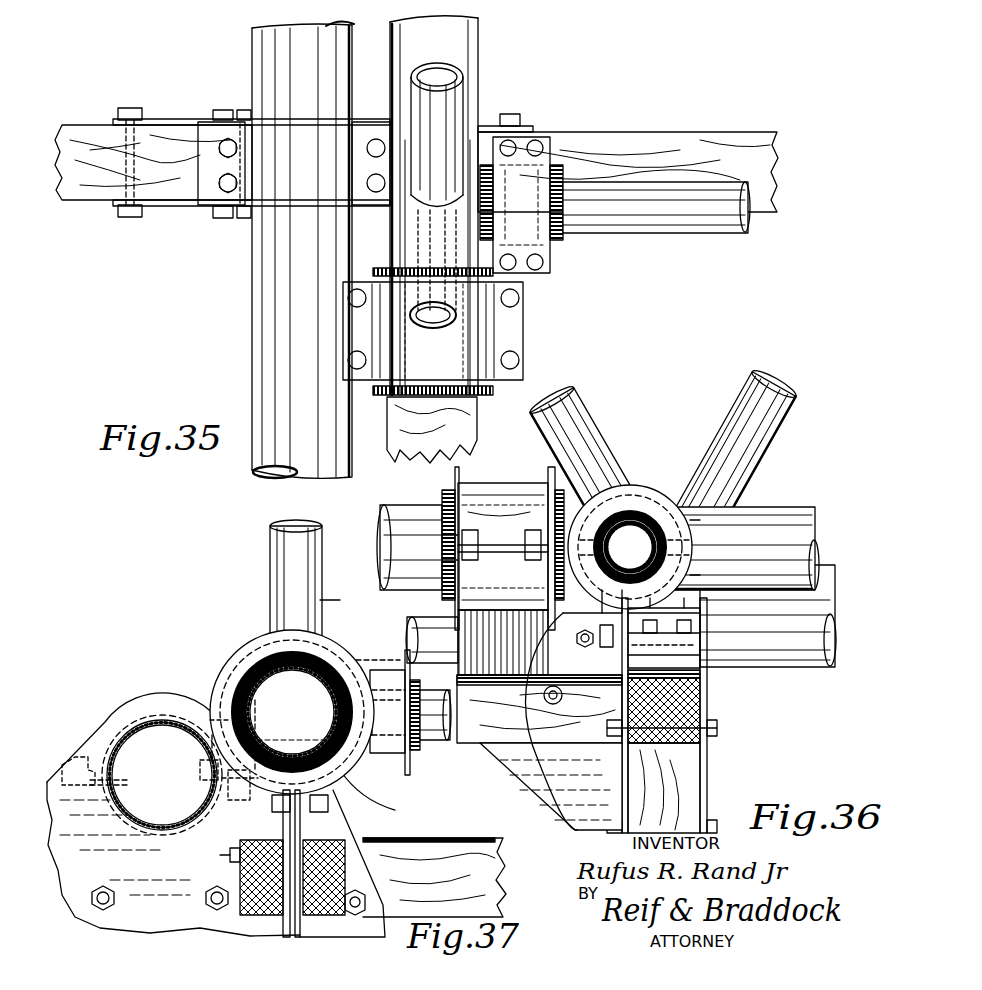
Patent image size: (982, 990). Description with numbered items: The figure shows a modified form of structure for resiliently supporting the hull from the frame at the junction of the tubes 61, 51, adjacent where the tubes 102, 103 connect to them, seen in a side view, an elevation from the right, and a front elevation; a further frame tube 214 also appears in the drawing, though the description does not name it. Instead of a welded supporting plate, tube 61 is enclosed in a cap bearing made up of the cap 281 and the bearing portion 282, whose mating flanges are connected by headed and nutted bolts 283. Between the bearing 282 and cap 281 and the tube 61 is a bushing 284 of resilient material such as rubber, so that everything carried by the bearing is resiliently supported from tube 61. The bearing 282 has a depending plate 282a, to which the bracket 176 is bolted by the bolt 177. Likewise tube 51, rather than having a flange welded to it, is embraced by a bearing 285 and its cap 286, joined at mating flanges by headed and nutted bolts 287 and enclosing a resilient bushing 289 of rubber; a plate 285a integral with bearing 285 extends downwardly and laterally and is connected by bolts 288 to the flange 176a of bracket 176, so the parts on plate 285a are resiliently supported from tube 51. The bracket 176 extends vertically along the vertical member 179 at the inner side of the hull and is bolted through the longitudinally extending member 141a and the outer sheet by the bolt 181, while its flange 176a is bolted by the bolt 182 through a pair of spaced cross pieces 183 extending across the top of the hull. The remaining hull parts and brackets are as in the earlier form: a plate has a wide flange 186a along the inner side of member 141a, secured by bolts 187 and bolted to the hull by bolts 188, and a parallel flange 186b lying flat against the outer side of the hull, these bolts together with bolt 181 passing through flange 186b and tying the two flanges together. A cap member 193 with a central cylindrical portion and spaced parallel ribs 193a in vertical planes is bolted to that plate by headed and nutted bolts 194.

In FIG. 35, the tube 51 is at (462, 46).
In FIG. 36, the tube 51 is at (783, 520).
In FIG. 37, the tube 51 is at (300, 668).
In FIG. 35, the tube 61 is at (708, 222).
In FIG. 36, the tube 61 is at (630, 547).
In FIG. 37, the tube 61 is at (428, 712).
In FIG. 35, the tube 102 is at (455, 312).
In FIG. 36, the tube 102 is at (570, 408).
In FIG. 37, the tube 102 is at (270, 556).
In FIG. 35, the tube 103 is at (452, 100).
In FIG. 36, the tube 103 is at (750, 408).
In FIG. 35, the longitudinally extending member 141a is at (712, 148).
In FIG. 36, the bracket 176 is at (580, 790).
In FIG. 36, the flange 176a is at (580, 745).
In FIG. 36, the headed and nutted bolt 177 is at (595, 626).
In FIG. 36, the vertical member 179 is at (707, 772).
In FIG. 35, the headed and nutted bolt 181 is at (520, 116).
In FIG. 36, the headed and nutted bolt 181 is at (712, 730).
In FIG. 37, the headed and nutted bolt 182 is at (220, 856).
In FIG. 37, the cross pieces 183 is at (232, 905).
In FIG. 35, the flange 186a is at (118, 202).
In FIG. 37, the flange 186a is at (88, 922).
In FIG. 36, the flange 186b is at (707, 792).
In FIG. 35, the headed and nutted bolts 187 is at (137, 220).
In FIG. 37, the headed and nutted bolts 188 is at (106, 904).
In FIG. 35, the cap member 193 is at (285, 188).
In FIG. 35, the ribs 193a is at (170, 122).
In FIG. 37, the ribs 193a is at (130, 725).
In FIG. 35, the headed and nutted bolts 194 is at (214, 122).
In FIG. 36, the headed and nutted bolts 194 is at (720, 650).
In FIG. 37, the headed and nutted bolts 194 is at (85, 760).
In FIG. 35, the vertical pipe 214 is at (268, 58).
In FIG. 36, the vertical pipe 214 is at (432, 630).
In FIG. 37, the vertical pipe 214 is at (168, 728).
In FIG. 35, the cap 281 is at (548, 238).
In FIG. 36, the cap 281 is at (620, 500).
In FIG. 37, the cap 281 is at (335, 630).
In FIG. 36, the bearing portion 282 is at (750, 655).
In FIG. 37, the bearing portion 282 is at (400, 790).
In FIG. 36, the depending plate 282a is at (690, 660).
In FIG. 37, the depending plate 282a is at (398, 755).
In FIG. 35, the headed and nutted bolts 283 is at (550, 135).
In FIG. 36, the headed and nutted bolts 283 is at (715, 515).
In FIG. 35, the bushing 284 is at (600, 232).
In FIG. 36, the bushing 284 is at (470, 650).
In FIG. 36, the bearing 285 is at (440, 596).
In FIG. 37, the plate 285a is at (418, 740).
In FIG. 35, the cap 286 is at (520, 330).
In FIG. 36, the cap 286 is at (520, 495).
In FIG. 37, the cap 286 is at (258, 640).
In FIG. 35, the headed and nutted bolts 287 is at (520, 360).
In FIG. 36, the headed and nutted bolts 287 is at (455, 492).
In FIG. 37, the headed and nutted bolts 287 is at (228, 688).
In FIG. 36, the bolts 288 is at (545, 705).
In FIG. 35, the resilient bushing 289 is at (477, 392).
In FIG. 36, the resilient bushing 289 is at (466, 478).
In FIG. 37, the resilient bushing 289 is at (262, 748).